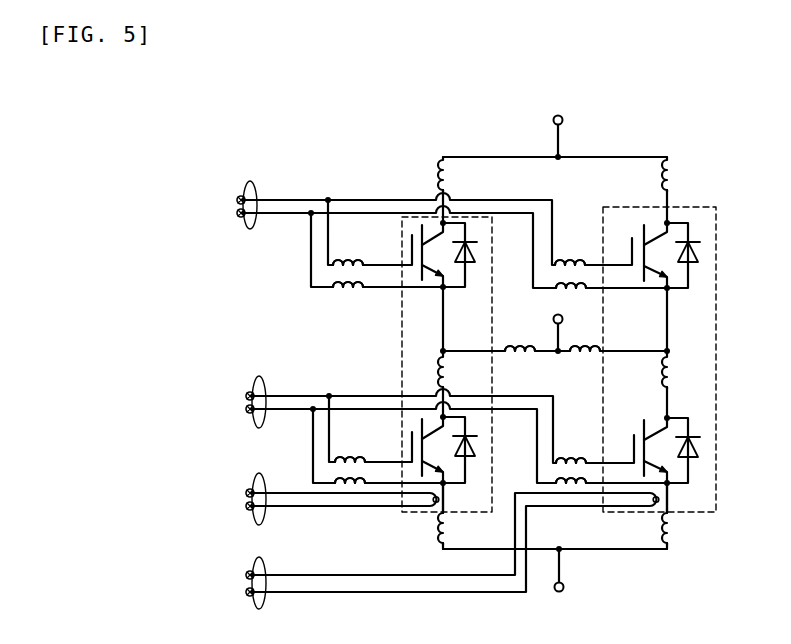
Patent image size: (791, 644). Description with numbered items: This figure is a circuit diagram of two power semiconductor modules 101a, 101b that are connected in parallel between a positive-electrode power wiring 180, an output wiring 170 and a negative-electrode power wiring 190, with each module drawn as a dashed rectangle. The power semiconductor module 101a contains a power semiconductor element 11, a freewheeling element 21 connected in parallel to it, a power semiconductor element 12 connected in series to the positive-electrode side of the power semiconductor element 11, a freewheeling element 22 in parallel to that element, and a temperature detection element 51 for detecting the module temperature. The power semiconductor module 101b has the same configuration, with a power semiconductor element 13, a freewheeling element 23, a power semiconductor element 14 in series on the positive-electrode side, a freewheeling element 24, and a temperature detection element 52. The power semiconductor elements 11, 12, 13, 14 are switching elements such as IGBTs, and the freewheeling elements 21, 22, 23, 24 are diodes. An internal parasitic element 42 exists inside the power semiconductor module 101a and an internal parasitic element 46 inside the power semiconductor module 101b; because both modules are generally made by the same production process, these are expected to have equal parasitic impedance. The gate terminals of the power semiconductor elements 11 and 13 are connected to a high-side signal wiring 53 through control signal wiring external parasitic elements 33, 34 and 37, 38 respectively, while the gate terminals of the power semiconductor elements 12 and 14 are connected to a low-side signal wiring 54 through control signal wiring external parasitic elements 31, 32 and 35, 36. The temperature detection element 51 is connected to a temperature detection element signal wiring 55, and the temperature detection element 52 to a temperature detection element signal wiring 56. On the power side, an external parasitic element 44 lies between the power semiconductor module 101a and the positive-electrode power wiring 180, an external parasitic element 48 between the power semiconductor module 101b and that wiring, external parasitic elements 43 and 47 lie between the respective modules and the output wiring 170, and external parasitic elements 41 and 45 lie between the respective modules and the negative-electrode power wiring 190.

The power semiconductor element 11 is at (411, 438).
The power semiconductor element 12 is at (409, 238).
The power semiconductor element 13 is at (653, 426).
The power semiconductor element 14 is at (650, 232).
The freewheeling element 21 is at (477, 443).
The freewheeling element 22 is at (477, 249).
The freewheeling element 23 is at (698, 447).
The freewheeling element 24 is at (698, 248).
The control signal wiring external parasitic element 31 is at (341, 460).
The control signal wiring external parasitic element 32 is at (358, 480).
The control signal wiring external parasitic element 33 is at (347, 262).
The control signal wiring external parasitic element 34 is at (344, 290).
The control signal wiring external parasitic element 35 is at (566, 456).
The control signal wiring external parasitic element 36 is at (584, 478).
The control signal wiring external parasitic element 37 is at (569, 258).
The control signal wiring external parasitic element 38 is at (573, 293).
The external parasitic element 41 is at (450, 531).
The internal parasitic element 42 is at (450, 373).
The external parasitic element 43 is at (528, 357).
The external parasitic element 44 is at (449, 172).
The external parasitic element 45 is at (673, 529).
The internal parasitic element 46 is at (671, 367).
The external parasitic element 47 is at (578, 357).
The external parasitic element 48 is at (671, 173).
The temperature detection element 51 is at (441, 497).
The temperature detection element 52 is at (662, 497).
The high-side signal wiring 53 is at (247, 185).
The low-side signal wiring 54 is at (252, 382).
The temperature detection element signal wiring 55 is at (252, 479).
The temperature detection element signal wiring 56 is at (252, 562).
The power semiconductor module 101a is at (419, 213).
The power semiconductor module 101b is at (716, 207).
The output wiring 170 is at (553, 326).
The positive-electrode power wiring 180 is at (553, 128).
The negative-electrode power wiring 190 is at (565, 576).